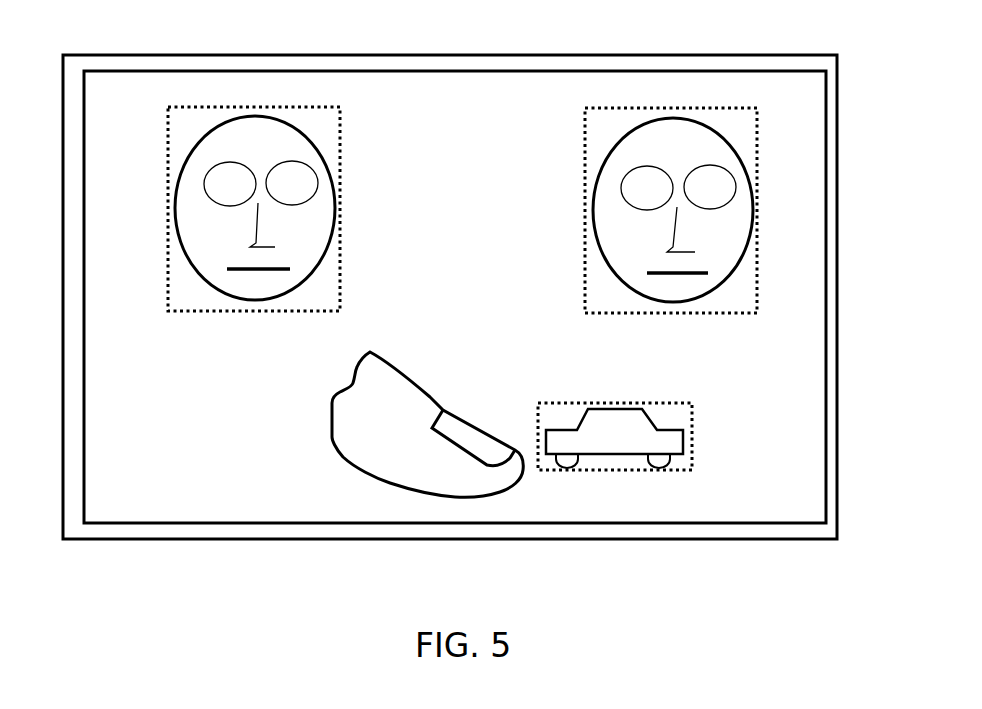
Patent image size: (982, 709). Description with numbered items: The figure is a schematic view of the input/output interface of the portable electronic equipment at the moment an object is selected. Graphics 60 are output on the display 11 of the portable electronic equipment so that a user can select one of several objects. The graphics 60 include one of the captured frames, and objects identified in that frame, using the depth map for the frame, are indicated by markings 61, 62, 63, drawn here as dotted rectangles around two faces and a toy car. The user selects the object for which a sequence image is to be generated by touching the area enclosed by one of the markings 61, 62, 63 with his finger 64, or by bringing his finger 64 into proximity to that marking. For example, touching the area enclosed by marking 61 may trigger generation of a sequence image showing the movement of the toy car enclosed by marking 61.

The display 11 is at (837, 534).
The graphics 60 is at (827, 495).
The marking 61 is at (690, 462).
The marking 62 is at (340, 298).
The marking 63 is at (757, 300).
The finger 64 is at (382, 478).